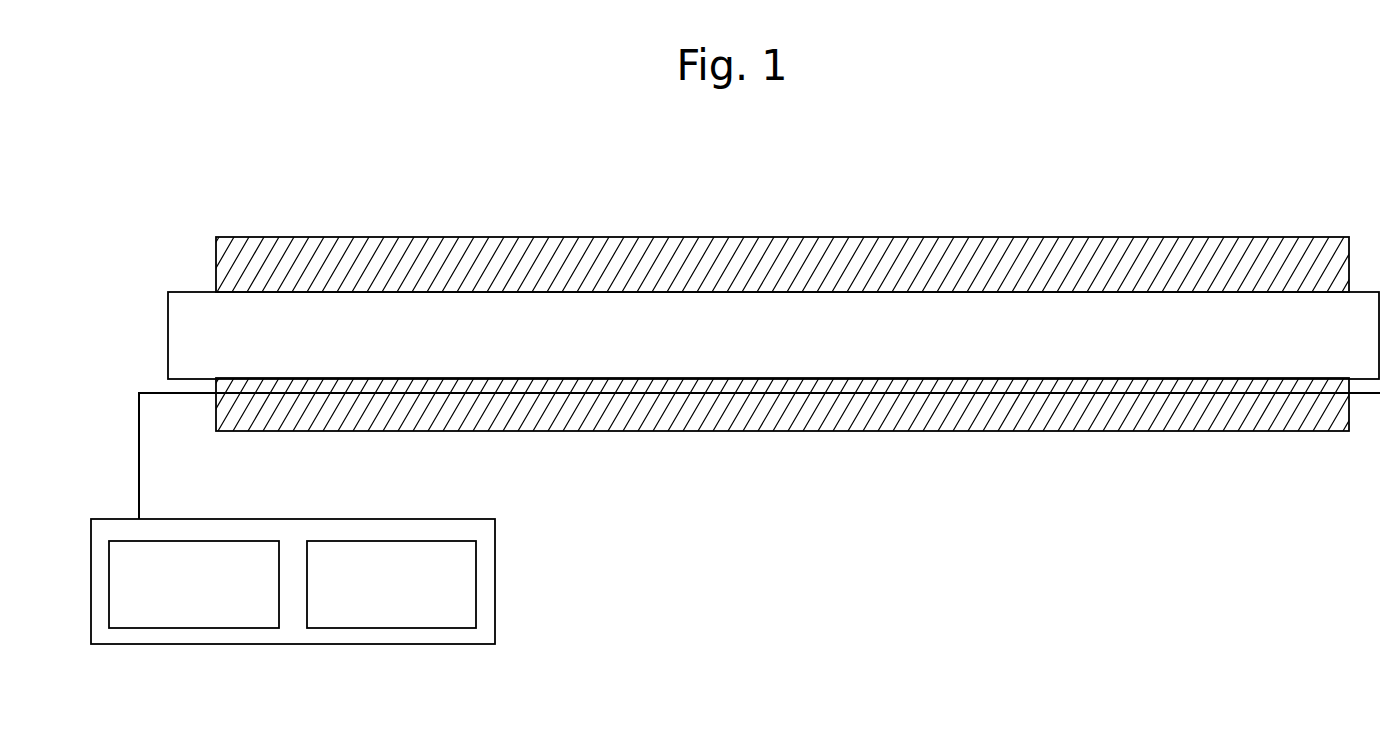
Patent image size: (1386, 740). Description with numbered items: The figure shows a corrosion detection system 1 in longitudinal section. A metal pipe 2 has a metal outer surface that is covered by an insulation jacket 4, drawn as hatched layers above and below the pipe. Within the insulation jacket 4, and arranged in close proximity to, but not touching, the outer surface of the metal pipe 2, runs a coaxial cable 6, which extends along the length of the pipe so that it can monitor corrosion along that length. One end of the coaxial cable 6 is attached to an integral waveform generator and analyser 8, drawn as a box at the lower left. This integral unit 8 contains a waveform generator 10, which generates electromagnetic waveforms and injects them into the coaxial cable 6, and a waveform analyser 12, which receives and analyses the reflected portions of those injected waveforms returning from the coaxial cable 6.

The corrosion detection system 1 is at (233, 180).
The metal pipe 2 is at (663, 312).
The insulation jacket 4 is at (990, 256).
The coaxial cable 6 is at (848, 394).
The integral waveform generator and analyser 8 is at (496, 574).
The waveform generator 10 is at (213, 541).
The waveform analyser 12 is at (395, 541).